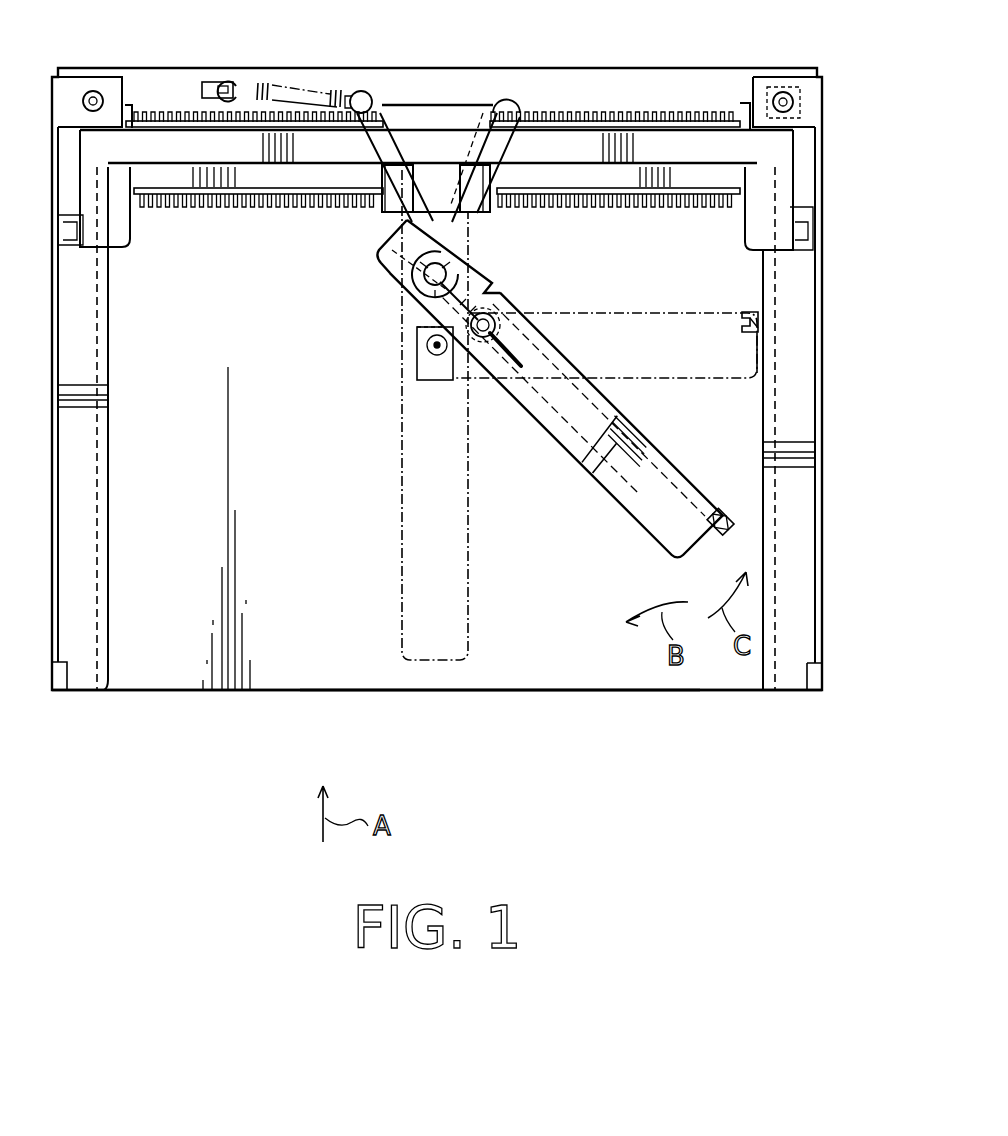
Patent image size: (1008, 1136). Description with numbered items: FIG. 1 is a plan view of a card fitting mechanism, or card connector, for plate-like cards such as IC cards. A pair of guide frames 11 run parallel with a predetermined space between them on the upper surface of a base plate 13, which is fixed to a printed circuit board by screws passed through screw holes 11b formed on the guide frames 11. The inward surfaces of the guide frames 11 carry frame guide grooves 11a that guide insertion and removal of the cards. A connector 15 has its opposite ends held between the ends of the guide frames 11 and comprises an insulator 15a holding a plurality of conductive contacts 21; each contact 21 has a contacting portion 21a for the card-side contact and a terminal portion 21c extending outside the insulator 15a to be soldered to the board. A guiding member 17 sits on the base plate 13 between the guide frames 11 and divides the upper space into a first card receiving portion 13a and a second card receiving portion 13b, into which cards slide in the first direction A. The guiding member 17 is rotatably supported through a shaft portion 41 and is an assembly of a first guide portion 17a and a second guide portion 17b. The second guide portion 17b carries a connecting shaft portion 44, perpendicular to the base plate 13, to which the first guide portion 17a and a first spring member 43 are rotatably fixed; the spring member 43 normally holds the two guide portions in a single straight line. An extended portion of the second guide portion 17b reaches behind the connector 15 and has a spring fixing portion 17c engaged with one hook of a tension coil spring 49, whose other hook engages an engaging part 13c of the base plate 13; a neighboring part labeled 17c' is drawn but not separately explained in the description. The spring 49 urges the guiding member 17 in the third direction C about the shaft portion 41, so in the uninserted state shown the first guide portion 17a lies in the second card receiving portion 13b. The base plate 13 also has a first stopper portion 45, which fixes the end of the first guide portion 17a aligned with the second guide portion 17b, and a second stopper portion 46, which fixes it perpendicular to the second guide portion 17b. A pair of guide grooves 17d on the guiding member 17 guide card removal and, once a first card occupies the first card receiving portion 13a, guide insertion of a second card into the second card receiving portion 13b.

The guide frames 11 is at (797, 590).
The frame guide grooves 11a is at (105, 660).
The screw holes 11b is at (93, 98).
The base plate 13 is at (410, 693).
The first card receiving portion 13a is at (250, 660).
The second card receiving portion 13b is at (552, 662).
The engaging part 13c is at (226, 82).
The connector 15 is at (530, 83).
The insulator 15a is at (548, 166).
The guiding member 17 is at (610, 507).
The first guide portion 17a is at (743, 348).
The second guide portion 17b is at (398, 262).
The spring fixing portion 17c is at (464, 119).
The left leg 17c' is at (387, 119).
The guide grooves 17d is at (693, 487).
The conductive contacts 21 is at (590, 207).
The contacting portion 21a is at (290, 207).
The terminal portion 21c is at (143, 110).
The shaft portion 41 is at (417, 300).
The first spring member 43 is at (527, 318).
The connecting shaft portion 44 is at (500, 312).
The first stopper portion 45 is at (733, 518).
The second stopper portion 46 is at (760, 302).
The tension coil spring 49 is at (302, 82).